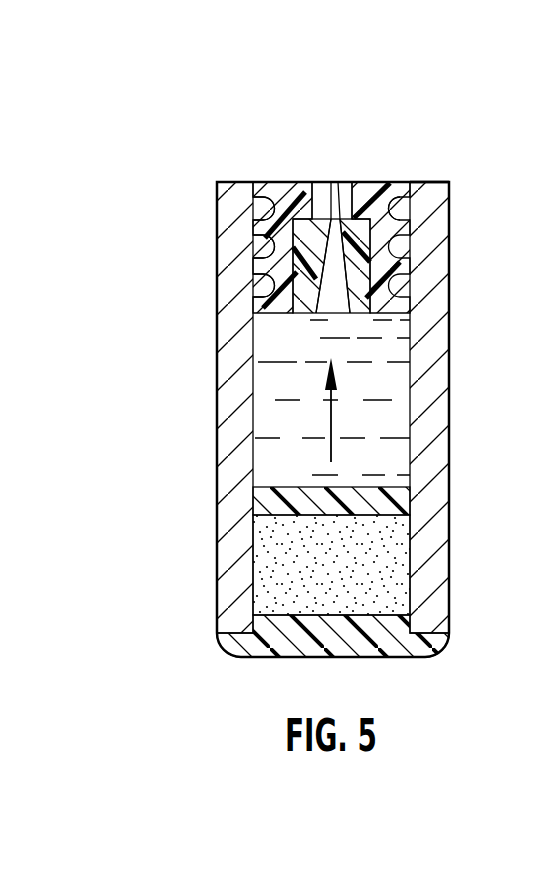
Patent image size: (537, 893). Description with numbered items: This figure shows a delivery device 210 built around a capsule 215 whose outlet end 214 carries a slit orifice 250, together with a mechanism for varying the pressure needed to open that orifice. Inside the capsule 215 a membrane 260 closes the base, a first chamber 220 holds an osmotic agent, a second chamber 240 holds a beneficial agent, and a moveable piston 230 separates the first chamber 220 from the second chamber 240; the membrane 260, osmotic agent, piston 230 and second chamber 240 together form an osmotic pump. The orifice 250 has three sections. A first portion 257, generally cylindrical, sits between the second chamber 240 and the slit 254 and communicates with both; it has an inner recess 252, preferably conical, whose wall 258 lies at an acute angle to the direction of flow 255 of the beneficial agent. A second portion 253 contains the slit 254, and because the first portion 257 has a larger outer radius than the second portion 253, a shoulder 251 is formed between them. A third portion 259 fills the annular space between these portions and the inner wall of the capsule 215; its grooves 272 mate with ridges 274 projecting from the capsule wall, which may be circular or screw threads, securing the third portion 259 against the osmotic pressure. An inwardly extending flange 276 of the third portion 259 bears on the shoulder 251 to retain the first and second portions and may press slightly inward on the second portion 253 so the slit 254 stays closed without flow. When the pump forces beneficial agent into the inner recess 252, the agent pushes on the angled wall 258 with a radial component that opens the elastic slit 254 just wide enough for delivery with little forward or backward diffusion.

The delivery device 210 is at (334, 98).
The outlet end 214 is at (433, 185).
The capsule 215 is at (228, 377).
The first chamber 220 is at (413, 553).
The moveable piston 230 is at (387, 495).
The second chamber 240 is at (250, 415).
The orifice 250 is at (330, 176).
The shoulder 251 is at (373, 185).
The inner recess 252 is at (321, 283).
The second portion 253 is at (343, 185).
The slit 254 is at (328, 212).
The direction of flow 255 is at (330, 443).
The first portion 257 is at (362, 307).
The wall 258 is at (348, 290).
The third portion 259 is at (263, 185).
The membrane 260 is at (420, 643).
The grooves 272 is at (265, 300).
The ridges 274 is at (257, 262).
The flange 276 is at (262, 207).